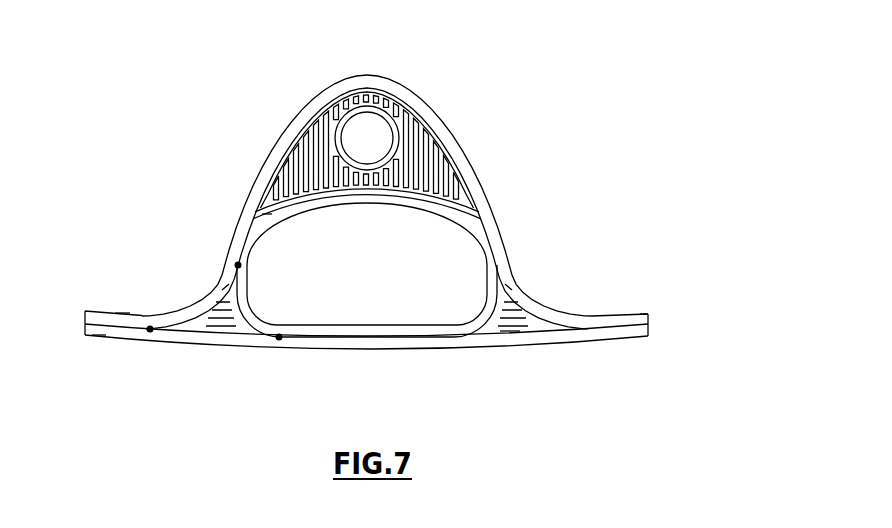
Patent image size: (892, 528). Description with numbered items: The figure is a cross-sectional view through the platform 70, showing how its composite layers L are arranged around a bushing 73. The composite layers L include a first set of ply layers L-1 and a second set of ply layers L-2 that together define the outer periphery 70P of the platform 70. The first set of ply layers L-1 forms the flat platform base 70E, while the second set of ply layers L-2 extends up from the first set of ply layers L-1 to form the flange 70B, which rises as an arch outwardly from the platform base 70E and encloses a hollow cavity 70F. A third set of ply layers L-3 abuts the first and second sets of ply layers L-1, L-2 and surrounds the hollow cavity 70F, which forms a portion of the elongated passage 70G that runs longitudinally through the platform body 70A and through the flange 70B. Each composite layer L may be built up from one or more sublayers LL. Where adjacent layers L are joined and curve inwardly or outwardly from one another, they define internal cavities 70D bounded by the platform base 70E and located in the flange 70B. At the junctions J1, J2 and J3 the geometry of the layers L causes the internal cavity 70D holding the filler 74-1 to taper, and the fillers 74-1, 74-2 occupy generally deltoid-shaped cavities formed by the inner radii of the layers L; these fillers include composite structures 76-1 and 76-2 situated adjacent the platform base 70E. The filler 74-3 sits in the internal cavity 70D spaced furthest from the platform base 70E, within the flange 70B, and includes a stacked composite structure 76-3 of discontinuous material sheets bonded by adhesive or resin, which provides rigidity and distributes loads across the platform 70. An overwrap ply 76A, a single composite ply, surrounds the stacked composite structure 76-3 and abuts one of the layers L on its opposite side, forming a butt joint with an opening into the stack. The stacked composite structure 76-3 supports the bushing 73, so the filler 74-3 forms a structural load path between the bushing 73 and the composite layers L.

The platform 70 is at (188, 78).
The platform body 70A is at (582, 313).
The flange 70B is at (463, 153).
The internal cavity 70D is at (447, 180).
The platform base 70E is at (400, 353).
The hollow cavity 70F is at (365, 310).
The elongated passage 70G is at (490, 262).
The outer periphery 70P is at (347, 352).
The bushing 73 is at (373, 103).
The filler 74-1 is at (193, 333).
The filler 74-2 is at (520, 328).
The filler 74-3 is at (412, 125).
The composite structure 76-1 is at (223, 297).
The composite structure 76-2 is at (513, 298).
The stacked composite structure 76-3 is at (433, 135).
The overwrap ply 76A is at (318, 118).
The composite layer L is at (485, 212).
The first set of ply layers L-1 is at (99, 335).
The second set of ply layers L-2 is at (122, 317).
The third set of ply layers L-3 is at (267, 217).
The sublayer LL is at (643, 315).
The junction J1 is at (150, 330).
The junction J2 is at (240, 268).
The junction J3 is at (280, 339).